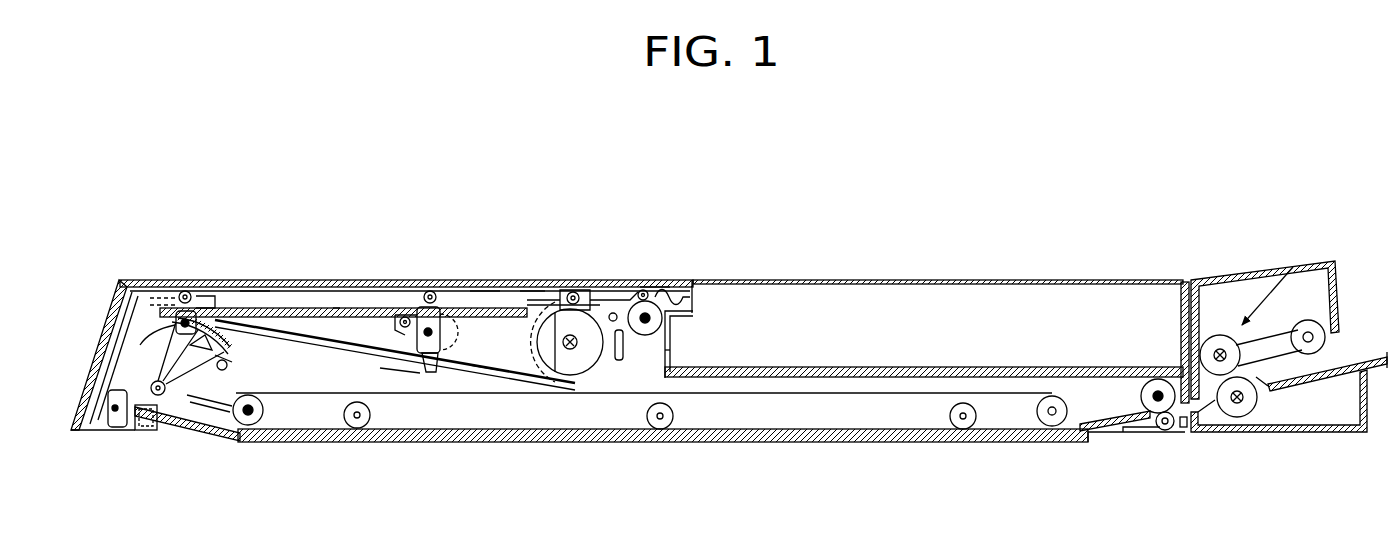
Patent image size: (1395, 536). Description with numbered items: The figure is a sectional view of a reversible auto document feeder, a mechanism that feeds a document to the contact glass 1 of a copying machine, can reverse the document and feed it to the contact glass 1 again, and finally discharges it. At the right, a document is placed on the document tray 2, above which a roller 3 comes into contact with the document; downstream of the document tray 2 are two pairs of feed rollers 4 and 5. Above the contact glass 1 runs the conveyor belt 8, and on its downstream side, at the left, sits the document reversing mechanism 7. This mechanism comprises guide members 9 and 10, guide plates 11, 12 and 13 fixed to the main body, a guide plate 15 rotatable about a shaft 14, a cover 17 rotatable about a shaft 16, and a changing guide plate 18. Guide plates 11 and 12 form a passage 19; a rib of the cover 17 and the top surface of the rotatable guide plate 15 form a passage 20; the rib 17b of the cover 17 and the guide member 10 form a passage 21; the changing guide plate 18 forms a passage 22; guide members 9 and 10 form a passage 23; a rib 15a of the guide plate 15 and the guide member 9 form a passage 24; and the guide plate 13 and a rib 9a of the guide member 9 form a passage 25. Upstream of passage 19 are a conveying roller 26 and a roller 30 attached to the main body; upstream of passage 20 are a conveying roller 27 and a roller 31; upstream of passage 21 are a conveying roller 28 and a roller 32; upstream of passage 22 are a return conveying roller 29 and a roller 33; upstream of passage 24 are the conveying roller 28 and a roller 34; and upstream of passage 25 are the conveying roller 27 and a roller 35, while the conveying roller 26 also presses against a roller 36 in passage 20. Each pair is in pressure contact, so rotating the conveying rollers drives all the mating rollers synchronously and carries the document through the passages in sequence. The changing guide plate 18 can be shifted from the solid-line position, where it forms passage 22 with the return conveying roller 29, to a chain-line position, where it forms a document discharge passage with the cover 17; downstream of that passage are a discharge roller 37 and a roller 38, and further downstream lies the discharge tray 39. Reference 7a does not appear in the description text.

The contact glass 1 is at (443, 442).
The document tray 2 is at (1347, 363).
The roller 3 is at (1297, 320).
The feed rollers 4 is at (1293, 264).
The feed rollers 5 is at (1163, 432).
The document reversing mechanism 7 is at (278, 280).
The cover inner plate 7a is at (298, 291).
The conveyor belt 8 is at (782, 393).
The guide member 9 is at (527, 375).
The rib 9a is at (226, 364).
The guide member 10 is at (480, 290).
The guide plate 11 is at (100, 330).
The guide plate 12 is at (110, 298).
The guide plate 13 is at (155, 290).
The shaft 14 is at (403, 314).
The guide plate 15 is at (352, 309).
The rib 15a is at (335, 307).
The shaft 16 is at (693, 281).
The cover 17 is at (487, 290).
The rib 17b is at (540, 290).
The changing guide plate 18 is at (620, 361).
The passage 19 is at (113, 430).
The passage 20 is at (257, 290).
The passage 21 is at (532, 297).
The passage 22 is at (630, 335).
The passage 23 is at (488, 366).
The passage 24 is at (274, 338).
The passage 25 is at (180, 318).
The conveying roller 26 is at (120, 386).
The conveying roller 27 is at (202, 293).
The conveying roller 28 is at (423, 307).
The return conveying roller 29 is at (593, 300).
The roller 30 is at (148, 430).
The roller 31 is at (186, 290).
The roller 32 is at (434, 292).
The roller 33 is at (580, 292).
The roller 34 is at (433, 372).
The roller 35 is at (223, 356).
The roller 36 is at (177, 430).
The discharge roller 37 is at (672, 350).
The roller 38 is at (657, 280).
The discharge tray 39 is at (730, 369).